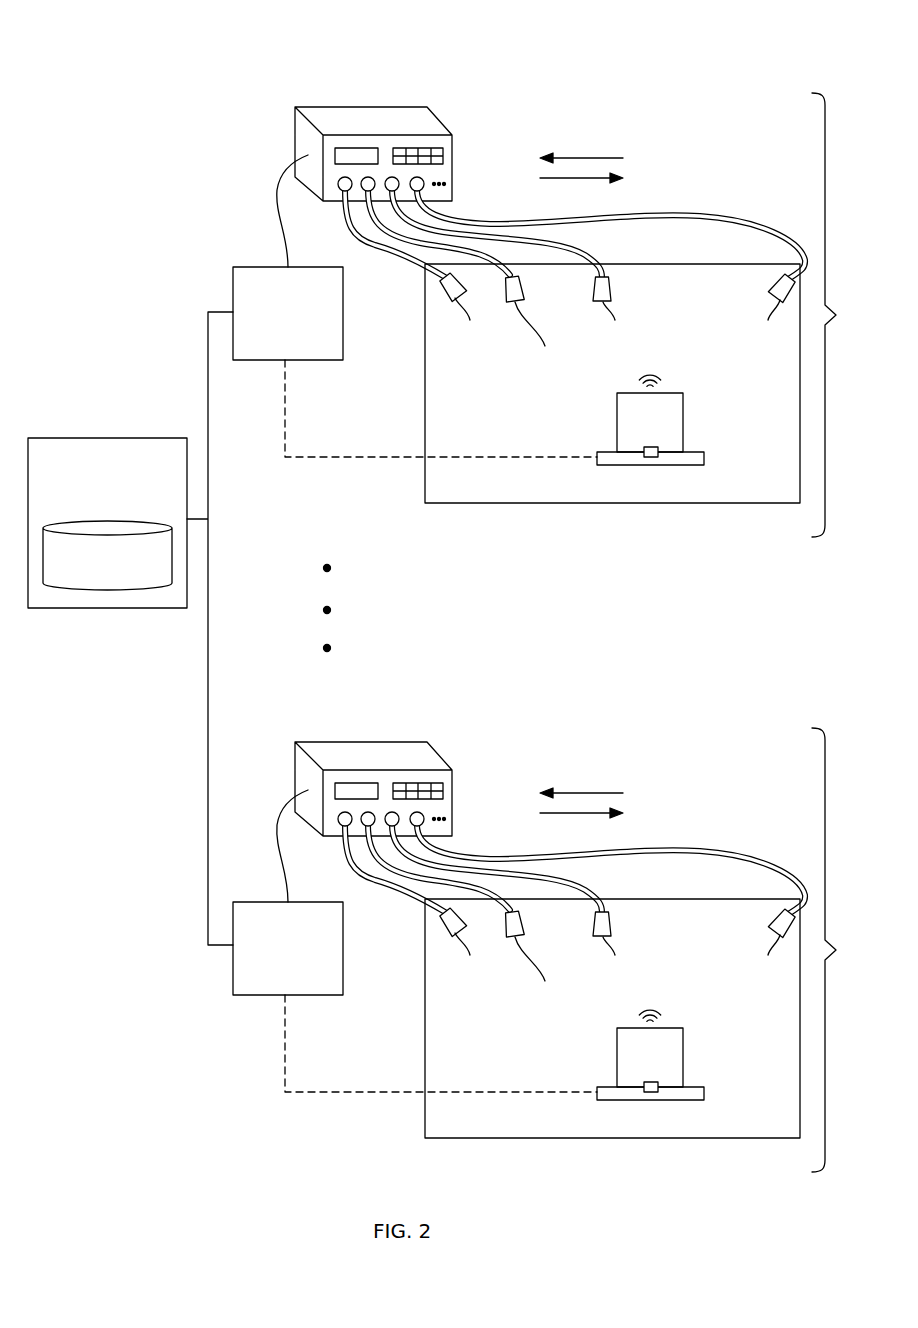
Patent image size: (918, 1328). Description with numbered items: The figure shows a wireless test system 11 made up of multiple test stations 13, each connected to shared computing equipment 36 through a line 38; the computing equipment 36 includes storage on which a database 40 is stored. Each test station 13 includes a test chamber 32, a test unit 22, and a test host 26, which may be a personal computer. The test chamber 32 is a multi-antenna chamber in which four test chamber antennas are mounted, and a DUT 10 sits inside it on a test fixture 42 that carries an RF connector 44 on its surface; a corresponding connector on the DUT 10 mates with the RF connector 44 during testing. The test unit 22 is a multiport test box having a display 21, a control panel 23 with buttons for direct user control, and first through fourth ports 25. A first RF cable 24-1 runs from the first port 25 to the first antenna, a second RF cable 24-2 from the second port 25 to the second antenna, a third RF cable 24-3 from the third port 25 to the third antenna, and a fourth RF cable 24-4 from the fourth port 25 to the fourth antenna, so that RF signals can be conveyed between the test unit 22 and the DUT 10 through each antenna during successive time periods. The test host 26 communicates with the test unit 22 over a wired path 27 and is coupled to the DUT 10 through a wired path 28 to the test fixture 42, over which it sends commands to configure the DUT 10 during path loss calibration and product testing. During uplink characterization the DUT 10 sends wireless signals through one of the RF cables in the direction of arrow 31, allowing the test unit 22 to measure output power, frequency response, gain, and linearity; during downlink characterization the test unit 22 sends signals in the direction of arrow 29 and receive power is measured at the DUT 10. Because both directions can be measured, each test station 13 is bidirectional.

The test system 11 is at (126, 62).
The display 21 is at (345, 148).
The test unit 22 is at (424, 95).
The control panel 23 is at (444, 151).
The ports 25 is at (427, 182).
The wired path 27 is at (272, 203).
The first RF cable 24-1 is at (405, 258).
The second RF cable 24-2 is at (520, 267).
The third RF cable 24-3 is at (577, 252).
The fourth RF cable 24-4 is at (723, 217).
The arrow 31 is at (567, 156).
The arrow 29 is at (567, 180).
The test station 13 is at (838, 632).
The DUT 10 is at (677, 393).
The test fixture 42 is at (705, 456).
The RF connector 44 is at (650, 457).
The test chamber 32 is at (742, 498).
The test host 26 is at (343, 337).
The wired path 28 is at (378, 459).
The line 38 is at (208, 478).
The computing equipment 36 is at (98, 437).
The database 40 is at (98, 575).